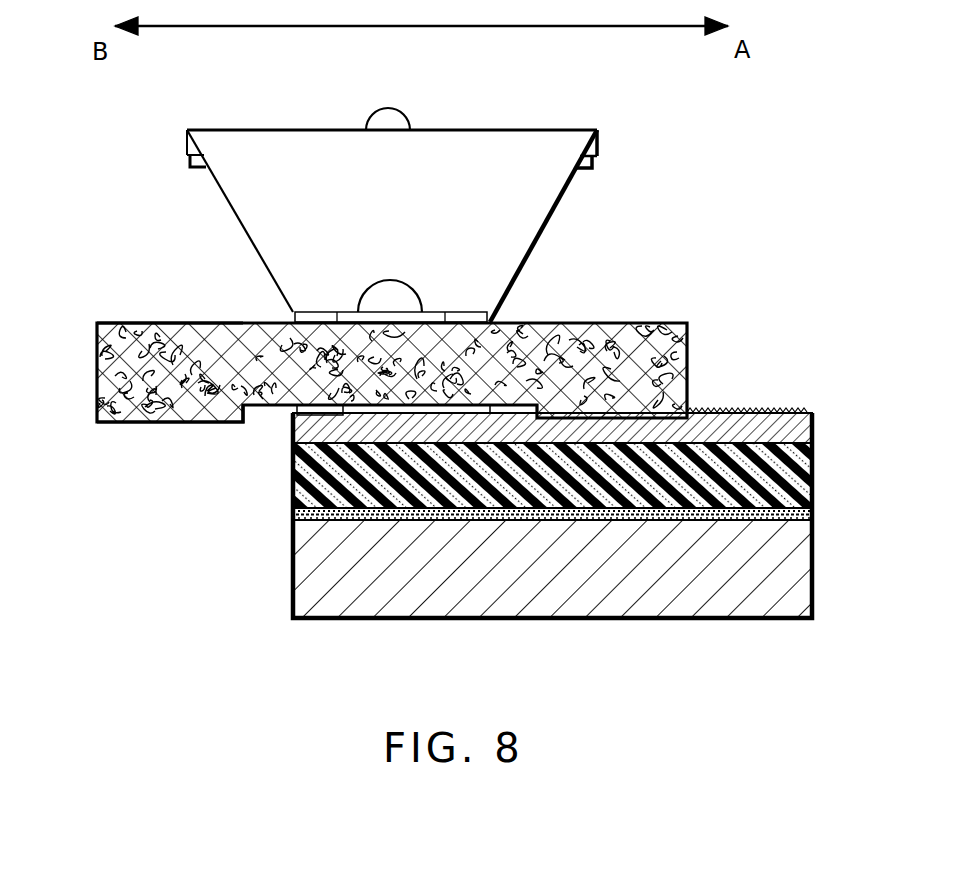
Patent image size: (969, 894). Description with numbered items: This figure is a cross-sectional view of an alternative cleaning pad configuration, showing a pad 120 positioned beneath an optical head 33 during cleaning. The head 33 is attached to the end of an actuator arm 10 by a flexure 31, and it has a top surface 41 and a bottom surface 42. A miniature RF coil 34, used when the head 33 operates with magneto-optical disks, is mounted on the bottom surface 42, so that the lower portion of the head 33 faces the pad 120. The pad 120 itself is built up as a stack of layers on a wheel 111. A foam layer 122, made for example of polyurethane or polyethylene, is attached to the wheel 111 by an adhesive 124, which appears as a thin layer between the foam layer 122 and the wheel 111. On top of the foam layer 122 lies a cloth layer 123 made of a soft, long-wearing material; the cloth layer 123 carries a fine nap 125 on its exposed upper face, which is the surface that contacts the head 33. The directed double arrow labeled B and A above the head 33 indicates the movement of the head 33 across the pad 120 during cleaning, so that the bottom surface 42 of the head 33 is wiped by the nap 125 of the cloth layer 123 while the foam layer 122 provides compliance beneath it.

The actuator arm 10 is at (598, 158).
The flexure 31 is at (540, 230).
The head 33 is at (97, 362).
The miniature RF coil 34 is at (506, 322).
The top surface 41 is at (160, 333).
The bottom surface 42 is at (205, 422).
The wheel 111 is at (813, 560).
The pad 120 is at (552, 486).
The foam layer 122 is at (813, 466).
The cloth layer 123 is at (813, 420).
The adhesive 124 is at (813, 512).
The fine nap 125 is at (757, 406).